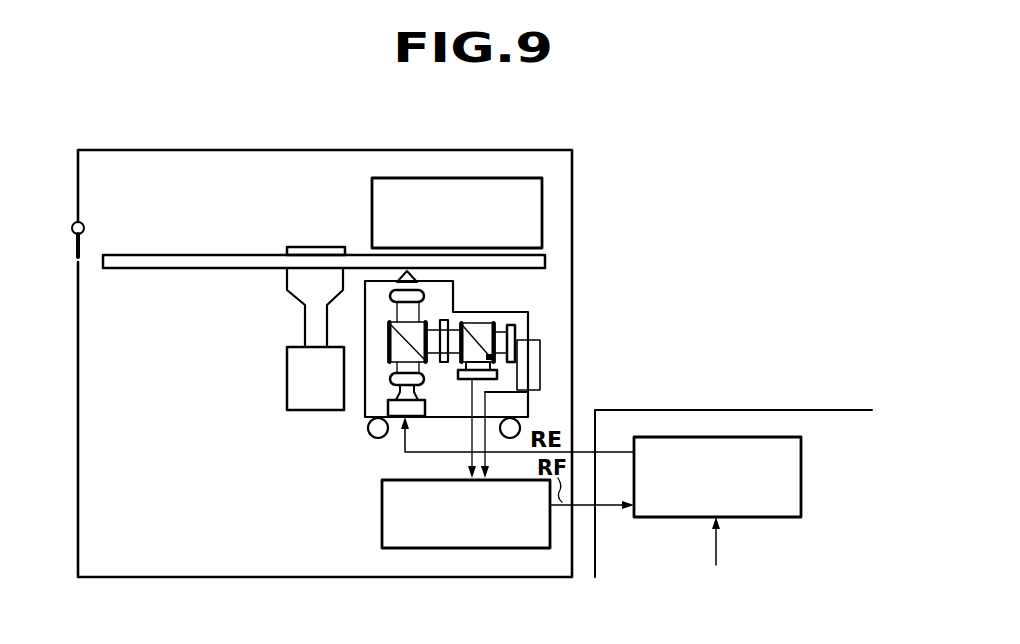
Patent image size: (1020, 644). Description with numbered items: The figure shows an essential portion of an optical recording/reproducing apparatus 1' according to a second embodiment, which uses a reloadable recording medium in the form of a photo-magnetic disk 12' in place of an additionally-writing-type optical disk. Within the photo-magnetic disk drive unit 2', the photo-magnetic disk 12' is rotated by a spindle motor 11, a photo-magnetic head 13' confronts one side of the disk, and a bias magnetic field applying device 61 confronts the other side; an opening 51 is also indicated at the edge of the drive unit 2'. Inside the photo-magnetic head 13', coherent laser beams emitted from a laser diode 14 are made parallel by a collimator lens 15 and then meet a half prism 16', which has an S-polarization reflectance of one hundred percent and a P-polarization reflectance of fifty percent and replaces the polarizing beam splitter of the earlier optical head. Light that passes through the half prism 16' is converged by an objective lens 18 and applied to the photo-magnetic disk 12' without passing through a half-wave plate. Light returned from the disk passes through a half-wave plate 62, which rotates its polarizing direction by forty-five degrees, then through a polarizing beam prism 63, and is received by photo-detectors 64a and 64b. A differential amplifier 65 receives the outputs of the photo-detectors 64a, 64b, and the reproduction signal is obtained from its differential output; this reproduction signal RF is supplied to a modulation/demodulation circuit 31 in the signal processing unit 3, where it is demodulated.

The optical recording/reproducing apparatus 1' is at (810, 229).
The photo-magnetic disk drive unit 2' is at (325, 337).
The signal processing unit 3 is at (766, 410).
The spindle motor 11 is at (286, 403).
The photo-magnetic disk 12' is at (324, 238).
The photo-magnetic head 13' is at (497, 354).
The laser diode 14 is at (397, 418).
The collimator lens 15 is at (424, 381).
The half prism 16' is at (380, 342).
The objective lens 18 is at (390, 294).
The modulation/demodulation circuit 31 is at (801, 472).
The window 51 is at (76, 238).
The bias magnetic field applying device 61 is at (372, 209).
The half-wave plate 62 is at (450, 316).
The polarizing beam prism 63 is at (495, 322).
The photo-detector 64a is at (516, 344).
The photo-detector 64b is at (497, 376).
The differential amplifier 65 is at (411, 548).